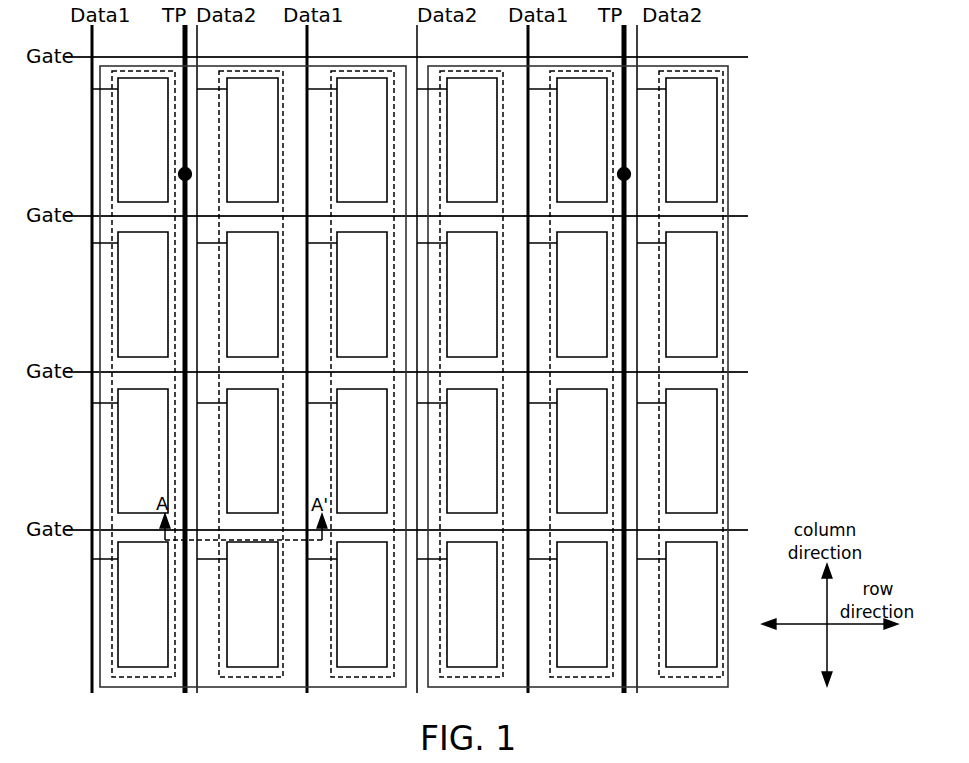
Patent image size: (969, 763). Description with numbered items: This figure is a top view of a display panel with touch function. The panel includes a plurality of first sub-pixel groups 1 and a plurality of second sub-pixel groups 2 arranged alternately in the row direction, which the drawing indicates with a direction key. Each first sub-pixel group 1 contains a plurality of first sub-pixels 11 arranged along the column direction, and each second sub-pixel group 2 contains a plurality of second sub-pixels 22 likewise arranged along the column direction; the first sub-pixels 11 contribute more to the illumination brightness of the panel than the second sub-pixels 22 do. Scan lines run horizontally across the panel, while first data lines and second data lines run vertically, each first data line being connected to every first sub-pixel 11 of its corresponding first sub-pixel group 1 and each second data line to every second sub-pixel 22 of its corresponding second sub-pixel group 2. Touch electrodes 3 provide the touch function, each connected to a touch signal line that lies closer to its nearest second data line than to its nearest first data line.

The first sub-pixel group 1 is at (378, 70).
The second sub-pixel group 2 is at (270, 70).
The touch electrode 3 is at (107, 142).
The first sub-pixel 11 is at (130, 329).
The second sub-pixel 22 is at (700, 335).